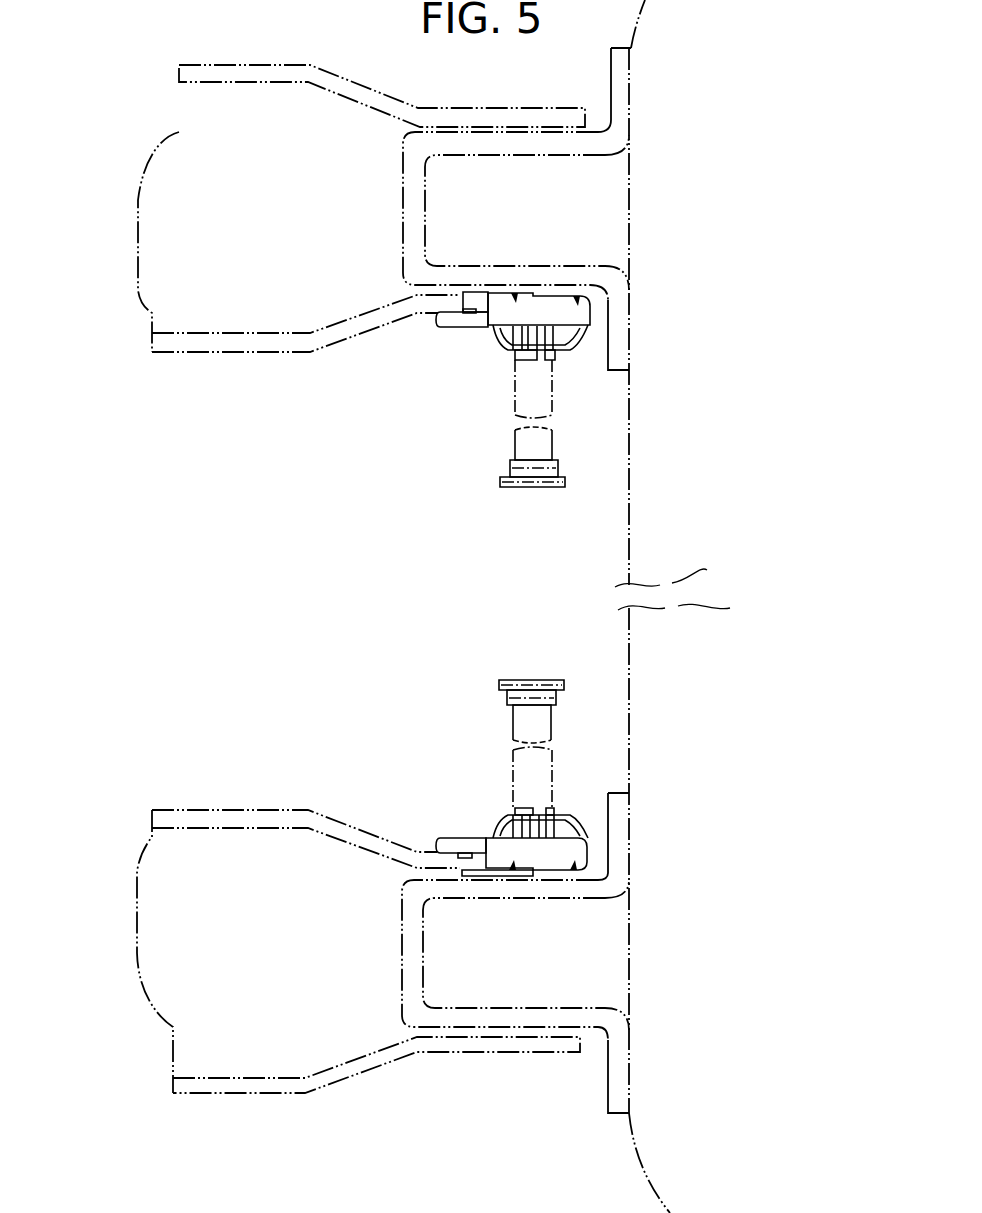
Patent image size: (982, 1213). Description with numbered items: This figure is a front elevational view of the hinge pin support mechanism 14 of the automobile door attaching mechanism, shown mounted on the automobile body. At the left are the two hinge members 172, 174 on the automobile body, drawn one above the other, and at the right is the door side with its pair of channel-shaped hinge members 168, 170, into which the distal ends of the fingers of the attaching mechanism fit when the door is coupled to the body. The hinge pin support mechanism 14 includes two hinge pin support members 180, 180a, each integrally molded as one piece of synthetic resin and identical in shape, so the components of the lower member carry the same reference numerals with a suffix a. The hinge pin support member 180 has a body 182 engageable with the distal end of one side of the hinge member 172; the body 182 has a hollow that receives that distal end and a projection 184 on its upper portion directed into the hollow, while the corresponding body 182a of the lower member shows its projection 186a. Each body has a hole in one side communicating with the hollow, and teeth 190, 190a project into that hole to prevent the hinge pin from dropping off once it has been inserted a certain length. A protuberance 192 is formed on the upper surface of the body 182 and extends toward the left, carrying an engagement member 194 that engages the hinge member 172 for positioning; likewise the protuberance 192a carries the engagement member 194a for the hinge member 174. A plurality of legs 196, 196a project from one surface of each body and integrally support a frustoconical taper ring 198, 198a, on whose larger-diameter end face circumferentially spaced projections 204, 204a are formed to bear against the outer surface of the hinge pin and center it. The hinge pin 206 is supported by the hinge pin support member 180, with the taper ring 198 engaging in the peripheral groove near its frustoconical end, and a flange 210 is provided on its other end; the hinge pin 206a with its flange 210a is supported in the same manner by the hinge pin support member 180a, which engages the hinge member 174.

The hinge pin support mechanism 14 is at (263, 508).
The hinge member 168 is at (622, 105).
The hinge member 170 is at (616, 1077).
The hinge member 172 is at (242, 345).
The hinge member 174 is at (247, 812).
The hinge pin support member 180 is at (447, 396).
The hinge pin support member 180a is at (447, 737).
The body 182 is at (580, 311).
The body 182a is at (553, 858).
The projection 184 is at (477, 292).
The projection 186a is at (473, 876).
The teeth 190 is at (588, 333).
The teeth 190a is at (583, 832).
The protuberance 192 is at (457, 327).
The protuberance 192a is at (445, 845).
The engagement member 194 is at (462, 307).
The engagement member 194a is at (458, 858).
The legs 196 is at (580, 340).
The legs 196a is at (580, 823).
The taper ring 198 is at (563, 353).
The taper ring 198a is at (572, 818).
The projections 204 is at (527, 362).
The projections 204a is at (515, 808).
The hinge pin 206 is at (543, 447).
The hinge pin 206a is at (540, 720).
The flange 210 is at (553, 489).
The flange 210a is at (543, 680).